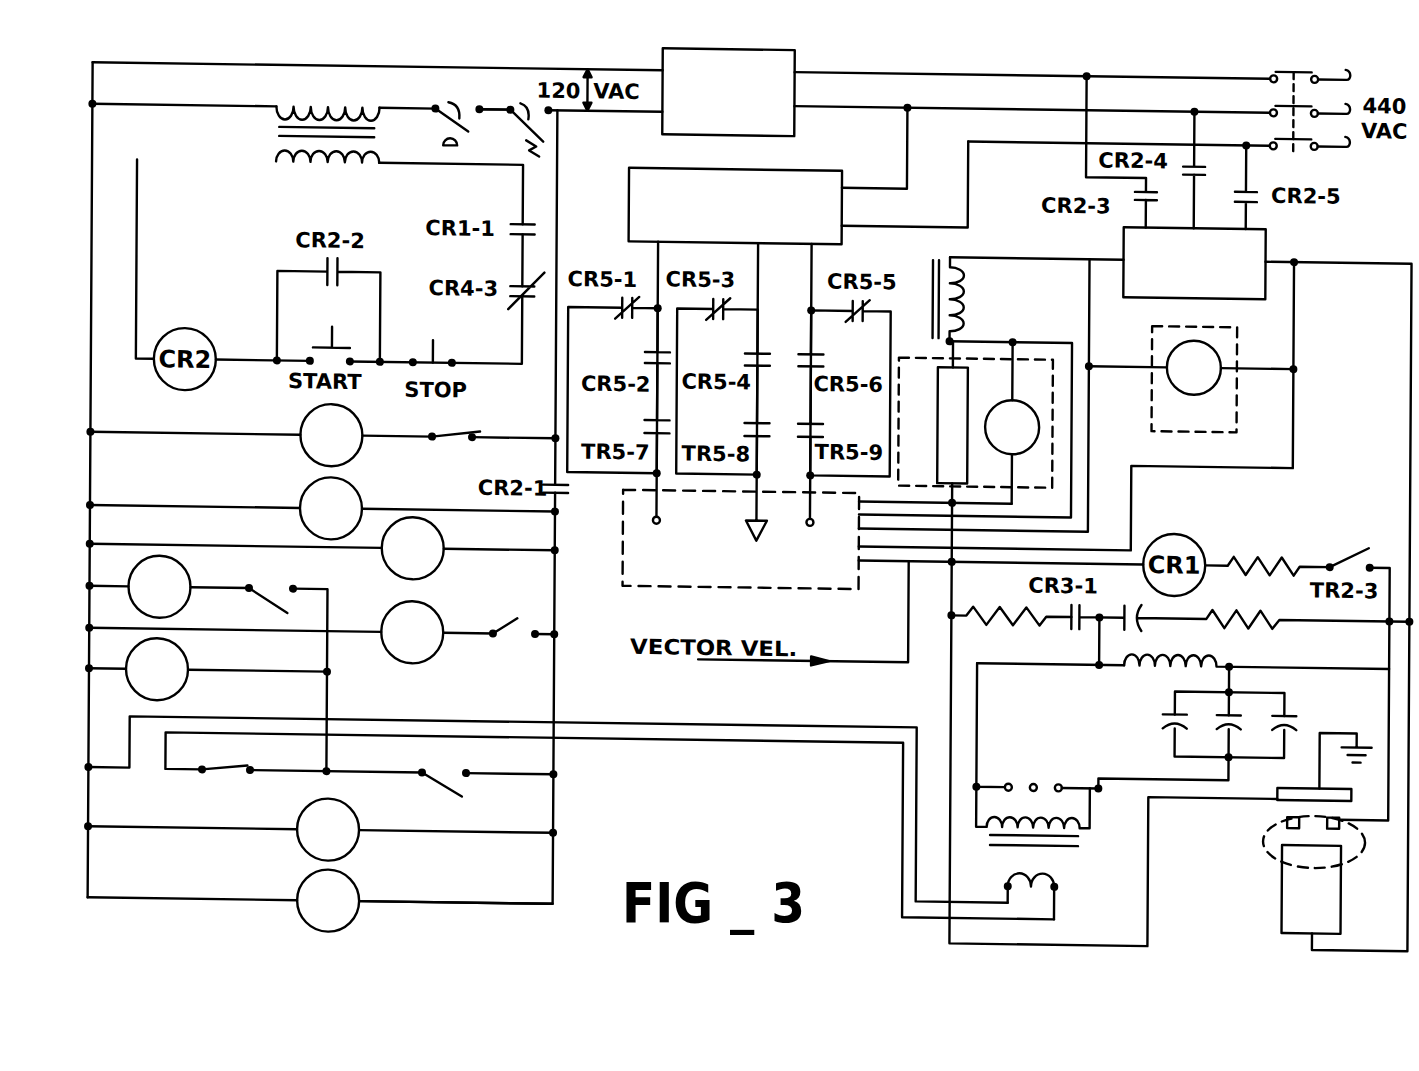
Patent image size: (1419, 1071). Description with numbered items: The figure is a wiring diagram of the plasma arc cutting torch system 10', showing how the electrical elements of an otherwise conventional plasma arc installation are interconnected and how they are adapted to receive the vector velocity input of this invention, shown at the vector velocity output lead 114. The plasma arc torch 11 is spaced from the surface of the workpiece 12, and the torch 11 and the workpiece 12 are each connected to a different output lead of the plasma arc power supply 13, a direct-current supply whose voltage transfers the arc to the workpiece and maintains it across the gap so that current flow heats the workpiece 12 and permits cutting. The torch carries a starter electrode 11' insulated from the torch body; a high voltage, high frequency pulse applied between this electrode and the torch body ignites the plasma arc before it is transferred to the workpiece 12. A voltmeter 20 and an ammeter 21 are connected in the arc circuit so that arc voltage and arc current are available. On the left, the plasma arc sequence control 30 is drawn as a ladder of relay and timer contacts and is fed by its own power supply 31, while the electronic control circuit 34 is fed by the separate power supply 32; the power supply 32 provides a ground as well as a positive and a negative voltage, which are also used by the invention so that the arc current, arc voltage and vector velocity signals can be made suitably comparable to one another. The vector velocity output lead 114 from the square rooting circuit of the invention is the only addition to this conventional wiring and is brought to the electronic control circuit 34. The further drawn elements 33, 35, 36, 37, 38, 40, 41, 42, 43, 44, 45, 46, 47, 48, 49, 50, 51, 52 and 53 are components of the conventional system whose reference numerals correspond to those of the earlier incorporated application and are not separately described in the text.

The plasma arc torch system 10' is at (1336, 575).
The plasma arc torch 11 is at (1314, 874).
The starter electrode 11' is at (1338, 809).
The workpiece 12 is at (1292, 772).
The plasma arc power supply 13 is at (1174, 259).
The voltmeter 20 is at (1183, 410).
The ammeter 21 is at (904, 454).
The plasma arc sequence control 30 is at (571, 614).
The power supply 31 is at (706, 98).
The power supply 32 is at (708, 208).
The transformer 33 is at (900, 293).
The electronic control circuit 34 is at (729, 572).
The line disconnect switch 35 is at (1278, 53).
The overload contact 36 is at (458, 98).
The fuse switch 37 is at (528, 98).
The control transformer 38 is at (283, 127).
The right bus conductor 40 is at (559, 388).
The left bus conductor 41 is at (93, 248).
The resistor 42 is at (1010, 598).
The inductor 43 is at (1154, 653).
The start pushbutton 44 is at (318, 339).
The stop pushbutton 45 is at (439, 343).
The high frequency transformer 46 is at (1070, 838).
The spark gap 47 is at (1049, 756).
The capacitor bank 48 is at (1294, 685).
The switch 49 is at (520, 610).
The conductor 50 is at (1296, 413).
The conductor 51 is at (1091, 450).
The conductor 52 is at (1037, 324).
The conductor 53 is at (1015, 483).
The vector velocity output lead 114 is at (851, 649).